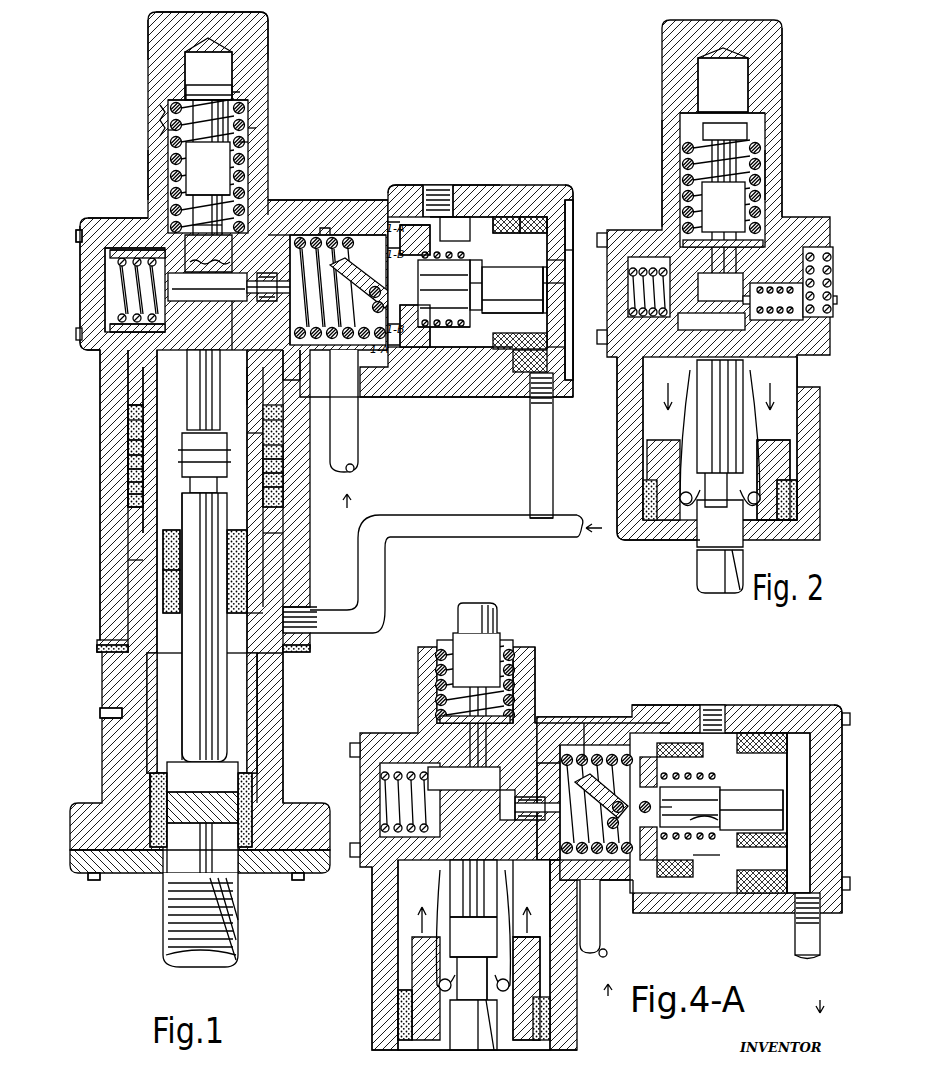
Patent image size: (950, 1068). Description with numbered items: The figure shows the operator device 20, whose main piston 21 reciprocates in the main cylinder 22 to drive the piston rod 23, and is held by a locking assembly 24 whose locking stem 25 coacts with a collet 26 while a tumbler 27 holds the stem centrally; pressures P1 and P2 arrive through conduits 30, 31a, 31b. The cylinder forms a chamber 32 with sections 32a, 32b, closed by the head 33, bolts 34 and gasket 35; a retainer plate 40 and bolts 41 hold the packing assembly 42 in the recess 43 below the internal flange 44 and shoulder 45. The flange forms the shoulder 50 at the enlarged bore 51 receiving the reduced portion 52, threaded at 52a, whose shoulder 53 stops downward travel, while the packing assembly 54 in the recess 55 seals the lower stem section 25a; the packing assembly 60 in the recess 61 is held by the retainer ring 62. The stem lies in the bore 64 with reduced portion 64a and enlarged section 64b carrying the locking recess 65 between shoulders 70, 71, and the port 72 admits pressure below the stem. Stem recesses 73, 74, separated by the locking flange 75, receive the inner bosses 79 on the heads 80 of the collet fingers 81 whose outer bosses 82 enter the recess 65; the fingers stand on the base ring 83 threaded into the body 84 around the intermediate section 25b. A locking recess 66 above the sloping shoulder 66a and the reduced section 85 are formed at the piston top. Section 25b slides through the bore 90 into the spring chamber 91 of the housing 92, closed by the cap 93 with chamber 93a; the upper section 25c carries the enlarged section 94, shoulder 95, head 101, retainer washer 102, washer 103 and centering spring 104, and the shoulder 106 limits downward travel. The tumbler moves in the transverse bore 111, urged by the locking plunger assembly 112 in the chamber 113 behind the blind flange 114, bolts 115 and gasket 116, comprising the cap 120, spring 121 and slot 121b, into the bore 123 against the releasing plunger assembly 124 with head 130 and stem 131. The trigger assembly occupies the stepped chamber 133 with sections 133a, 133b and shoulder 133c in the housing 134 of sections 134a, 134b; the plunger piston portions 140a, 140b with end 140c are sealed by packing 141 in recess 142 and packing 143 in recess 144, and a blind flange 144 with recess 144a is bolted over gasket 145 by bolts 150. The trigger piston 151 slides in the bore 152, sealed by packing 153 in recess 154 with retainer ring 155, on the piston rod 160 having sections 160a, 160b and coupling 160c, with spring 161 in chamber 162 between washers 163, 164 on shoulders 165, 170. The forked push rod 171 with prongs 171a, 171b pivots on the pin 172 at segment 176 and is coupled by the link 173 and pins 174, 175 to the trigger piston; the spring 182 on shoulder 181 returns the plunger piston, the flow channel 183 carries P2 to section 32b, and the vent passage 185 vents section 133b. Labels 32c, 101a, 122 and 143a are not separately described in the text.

In FIG. 1, the operator device 20 is at (317, 57).
In FIG. 1, the main piston 21 is at (128, 400).
In FIG. 2, the main piston 21 is at (785, 462).
In FIG. 4-A, the main piston 21 is at (540, 1000).
In FIG. 1, the main cylinder 22 is at (91, 535).
In FIG. 2, the main cylinder 22 is at (633, 540).
In FIG. 4-A, the main cylinder 22 is at (372, 1027).
In FIG. 1, the piston rod 23 is at (163, 912).
In FIG. 1, the locking assembly 24 is at (119, 395).
In FIG. 2, the locking assembly 24 is at (675, 378).
In FIG. 4-A, the locking assembly 24 is at (430, 887).
In FIG. 1, the locking stem 25 is at (185, 683).
In FIG. 2, the locking stem 25 is at (697, 568).
In FIG. 4-A, the locking stem 25 is at (485, 1035).
In FIG. 1, the lower section of locking stem 25a is at (190, 725).
In FIG. 1, the intermediate section of locking stem 25b is at (198, 195).
In FIG. 1, the upper end section of locking stem 25c is at (210, 233).
In FIG. 1, the collet 26 is at (130, 426).
In FIG. 2, the collet 26 is at (790, 393).
In FIG. 1, the tumbler 27 is at (238, 286).
In FIG. 2, the tumbler 27 is at (708, 312).
In FIG. 4-A, the tumbler 27 is at (504, 792).
In FIG. 1, the conduit 30 is at (352, 425).
In FIG. 4-A, the conduit 30 is at (612, 953).
In FIG. 1, the conduit 31a is at (415, 534).
In FIG. 1, the conduit 31b is at (530, 485).
In FIG. 4-A, the conduit 31b is at (815, 940).
In FIG. 1, the cylindrical chamber 32 is at (128, 564).
In FIG. 1, the lower chamber section 32a is at (275, 555).
In FIG. 1, the upper chamber section 32b is at (110, 350).
In FIG. 1, the gasket 32c is at (290, 648).
In FIG. 1, the head 33 is at (102, 712).
In FIG. 1, the bolts 34 is at (100, 698).
In FIG. 1, the gasket 35 is at (100, 648).
In FIG. 1, the retainer plate 40 is at (72, 857).
In FIG. 1, the bolts 41 is at (88, 878).
In FIG. 1, the packing assembly 42 is at (152, 812).
In FIG. 1, the recess 43 is at (252, 790).
In FIG. 1, the internal flange 44 is at (240, 800).
In FIG. 1, the shoulder 45 is at (148, 776).
In FIG. 1, the annular shoulder 50 is at (275, 730).
In FIG. 1, the enlarged bore 51 is at (265, 672).
In FIG. 1, the reduced portion of main piston 52 is at (160, 548).
In FIG. 1, the threaded connection 52a is at (160, 583).
In FIG. 1, the shoulder on piston rod 53 is at (125, 640).
In FIG. 1, the packing assembly 54 is at (250, 570).
In FIG. 1, the recess 55 is at (282, 530).
In FIG. 1, the packing assembly 60 is at (62, 466).
In FIG. 1, the external annular recess 61 is at (130, 412).
In FIG. 1, the retainer ring 62 is at (140, 508).
In FIG. 1, the bore of main piston 64 is at (135, 494).
In FIG. 1, the lower reduced bore portion 64a is at (198, 678).
In FIG. 1, the upper enlarged bore section 64b is at (240, 408).
In FIG. 1, the internal annular locking recess 65 is at (132, 453).
In FIG. 1, the internal annular locking recess 66 is at (130, 368).
In FIG. 1, the sloping annular shoulder 66a is at (240, 392).
In FIG. 4-A, the sloping annular shoulder 66a is at (540, 945).
In FIG. 1, the upper annular shoulder 70 is at (262, 438).
In FIG. 1, the lower annular shoulder 71 is at (265, 478).
In FIG. 1, the lateral port 72 is at (255, 612).
In FIG. 1, the upper annular locking recess 73 is at (265, 425).
In FIG. 2, the upper annular locking recess 73 is at (755, 525).
In FIG. 4-A, the upper annular locking recess 73 is at (455, 940).
In FIG. 1, the lower annular locking recess 74 is at (265, 492).
In FIG. 4-A, the lower annular locking recess 74 is at (500, 985).
In FIG. 1, the locking flange 75 is at (265, 452).
In FIG. 4-A, the locking flange 75 is at (458, 960).
In FIG. 1, the inner bosses 79 is at (132, 481).
In FIG. 1, the heads of collet fingers 80 is at (265, 464).
In FIG. 2, the heads of collet fingers 80 is at (788, 498).
In FIG. 4-A, the heads of collet fingers 80 is at (440, 982).
In FIG. 1, the collet fingers 81 is at (132, 440).
In FIG. 1, the outer bosses 82 is at (132, 467).
In FIG. 1, the base ring 83 is at (135, 328).
In FIG. 1, the body 84 is at (150, 160).
In FIG. 2, the body 84 is at (662, 150).
In FIG. 4-A, the body 84 is at (535, 662).
In FIG. 1, the reduced section 85 is at (245, 352).
In FIG. 1, the bore of body 90 is at (208, 253).
In FIG. 1, the spring chamber 91 is at (172, 140).
In FIG. 1, the housing 92 is at (160, 132).
In FIG. 1, the cap 93 is at (150, 36).
In FIG. 2, the cap 93 is at (783, 50).
In FIG. 1, the chamber of cap 93a is at (208, 76).
In FIG. 2, the chamber of cap 93a is at (723, 85).
In FIG. 1, the enlarged section of locking stem 94 is at (212, 165).
In FIG. 2, the enlarged section of locking stem 94 is at (722, 187).
In FIG. 4-A, the enlarged section of locking stem 94 is at (475, 677).
In FIG. 1, the upwardly facing shoulder 95 is at (250, 140).
In FIG. 1, the head 101 is at (210, 151).
In FIG. 2, the head 101 is at (732, 122).
In FIG. 1, the screw head 101a is at (175, 95).
In FIG. 1, the retainer washer 102 is at (248, 112).
In FIG. 2, the retainer washer 102 is at (680, 145).
In FIG. 1, the washer 103 is at (270, 205).
In FIG. 1, the spring 104 is at (246, 146).
In FIG. 2, the spring 104 is at (763, 168).
In FIG. 4-A, the spring 104 is at (515, 690).
In FIG. 1, the internal shoulder of body 106 is at (278, 235).
In FIG. 1, the transverse bore 111 is at (200, 292).
In FIG. 1, the locking plunger assembly 112 is at (103, 283).
In FIG. 2, the locking plunger assembly 112 is at (660, 258).
In FIG. 4-A, the locking plunger assembly 112 is at (410, 735).
In FIG. 1, the cylindrical chamber 113 is at (125, 322).
In FIG. 1, the blind flange 114 is at (92, 218).
In FIG. 1, the bolts 115 is at (80, 230).
In FIG. 1, the gasket 116 is at (106, 218).
In FIG. 1, the hollow cylindrical cap 120 is at (118, 260).
In FIG. 1, the spring 121 is at (112, 264).
In FIG. 1, the flange bore 122 is at (108, 248).
In FIG. 1, the bore of body 123 is at (305, 235).
In FIG. 1, the releasing plunger assembly 124 is at (283, 225).
In FIG. 2, the releasing plunger assembly 124 is at (790, 270).
In FIG. 4-A, the releasing plunger assembly 124 is at (565, 745).
In FIG. 1, the head 130 is at (240, 322).
In FIG. 1, the stem 131 is at (320, 215).
In FIG. 4-A, the stem 131 is at (548, 850).
In FIG. 1, the stepped cylindrical chamber 133 is at (445, 217).
In FIG. 1, the inner reduced chamber section 133a is at (360, 235).
In FIG. 4-A, the inner reduced chamber section 133a is at (610, 745).
In FIG. 1, the outer enlarged chamber section 133b is at (460, 185).
In FIG. 1, the shoulder 133c is at (470, 260).
In FIG. 4-A, the shoulder 133c is at (795, 740).
In FIG. 1, the housing 134 is at (520, 217).
In FIG. 4-A, the housing 134 is at (748, 733).
In FIG. 4-A, the outer section of housing 134a is at (740, 733).
In FIG. 1, the inner section of housing 134b is at (392, 185).
In FIG. 4-A, the inner section of housing 134b is at (645, 705).
In FIG. 1, the reduced inner portion of plunger piston 140a is at (445, 375).
In FIG. 1, the enlarged outer portion of plunger piston 140b is at (480, 370).
In FIG. 1, the left end of enlarged piston section 140c is at (490, 217).
In FIG. 1, the packing assembly 141 is at (448, 210).
In FIG. 1, the annular recess 142 is at (402, 397).
In FIG. 1, the packing assembly 143 is at (540, 260).
In FIG. 1, the bore 143a is at (562, 200).
In FIG. 1, the blind flange 144 is at (572, 230).
In FIG. 4-A, the blind flange 144 is at (812, 740).
In FIG. 1, the recess 144a is at (575, 255).
In FIG. 1, the gasket 145 is at (553, 200).
In FIG. 1, the bolts 150 is at (565, 185).
In FIG. 4-A, the bolts 150 is at (845, 700).
In FIG. 1, the trigger piston 151 is at (550, 298).
In FIG. 4-A, the trigger piston 151 is at (770, 810).
In FIG. 1, the bore 152 is at (500, 230).
In FIG. 1, the packing assembly 153 is at (522, 230).
In FIG. 1, the internal annular recess 154 is at (560, 318).
In FIG. 1, the retainer ring 155 is at (550, 283).
In FIG. 1, the piston rod 160 is at (444, 289).
In FIG. 4-A, the piston rod 160 is at (690, 806).
In FIG. 1, the reduced section of piston rod 160a is at (479, 290).
In FIG. 4-A, the reduced section of piston rod 160a is at (718, 807).
In FIG. 4-A, the reduced section of piston rod 160b is at (678, 801).
In FIG. 4-A, the internally threaded coupling 160c is at (710, 855).
In FIG. 1, the spring 161 is at (455, 229).
In FIG. 4-A, the spring 161 is at (670, 740).
In FIG. 1, the spring chamber 162 is at (478, 375).
In FIG. 1, the washer 163 is at (490, 310).
In FIG. 4-A, the washer 163 is at (694, 813).
In FIG. 1, the washer 164 is at (440, 380).
In FIG. 4-A, the shoulder 165 is at (718, 817).
In FIG. 1, the shoulder 170 is at (410, 380).
In FIG. 1, the forked push rod 171 is at (405, 220).
In FIG. 1, the prong 171a is at (400, 225).
In FIG. 1, the prong 171b is at (352, 400).
In FIG. 4-A, the prong 171b is at (598, 940).
In FIG. 4-A, the pin 172 is at (600, 760).
In FIG. 1, the link 173 is at (512, 290).
In FIG. 4-A, the link 173 is at (615, 880).
In FIG. 4-A, the pin 174 is at (618, 895).
In FIG. 4-A, the pin 175 is at (638, 775).
In FIG. 1, the cylindrical segment 176 is at (376, 285).
In FIG. 1, the external annular shoulder 181 is at (425, 200).
In FIG. 1, the spring 182 is at (325, 235).
In FIG. 4-A, the spring 182 is at (585, 723).
In FIG. 1, the flow channel 183 is at (348, 450).
In FIG. 4-A, the flow channel 183 is at (531, 898).
In FIG. 4-A, the vent passage 185 is at (695, 705).
In FIG. 1, the pressure P1 is at (595, 519).
In FIG. 4-A, the pressure P1 is at (815, 1002).
In FIG. 1, the pressure P2 is at (345, 493).
In FIG. 4-A, the pressure P2 is at (607, 981).
In FIG. 1, the slot 121b is at (560, 268).